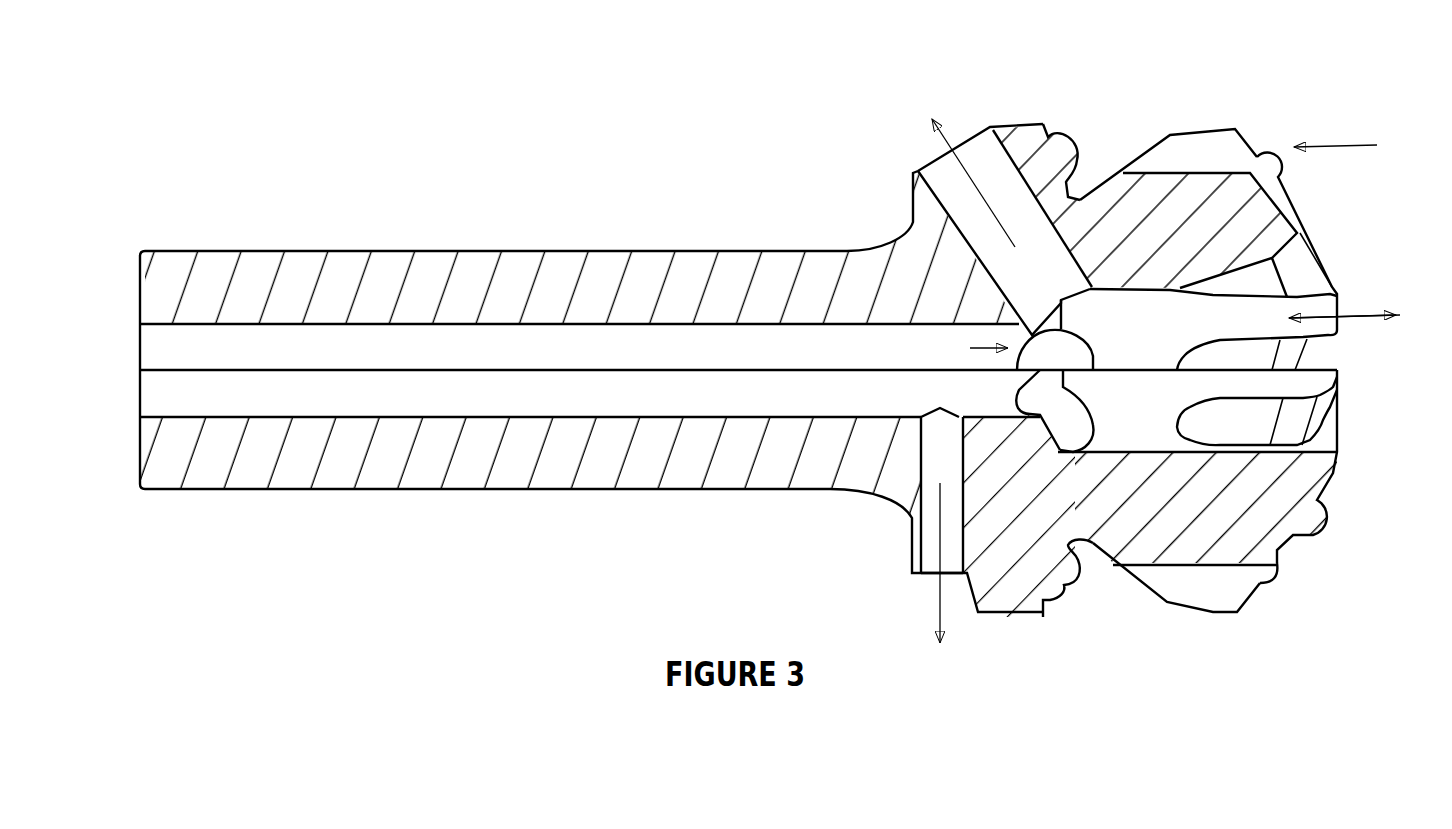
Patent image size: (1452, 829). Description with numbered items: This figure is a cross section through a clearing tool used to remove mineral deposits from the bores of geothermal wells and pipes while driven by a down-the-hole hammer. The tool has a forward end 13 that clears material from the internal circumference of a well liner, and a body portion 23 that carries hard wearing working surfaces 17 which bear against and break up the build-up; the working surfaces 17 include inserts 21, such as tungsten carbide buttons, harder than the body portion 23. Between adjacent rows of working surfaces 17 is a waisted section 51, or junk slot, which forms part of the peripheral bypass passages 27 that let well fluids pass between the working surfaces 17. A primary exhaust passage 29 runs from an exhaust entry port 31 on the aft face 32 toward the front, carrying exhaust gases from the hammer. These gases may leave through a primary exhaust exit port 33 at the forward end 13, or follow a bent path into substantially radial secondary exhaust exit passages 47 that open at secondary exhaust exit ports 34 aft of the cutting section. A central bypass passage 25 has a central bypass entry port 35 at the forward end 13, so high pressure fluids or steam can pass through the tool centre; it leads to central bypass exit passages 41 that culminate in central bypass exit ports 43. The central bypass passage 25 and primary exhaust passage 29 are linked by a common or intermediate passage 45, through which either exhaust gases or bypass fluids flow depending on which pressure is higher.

The forward end 13 is at (1347, 210).
The working surfaces 17 is at (1071, 110).
The inserts 21 is at (1325, 525).
The body portion 23 is at (990, 654).
The central bypass passage 25 is at (1112, 333).
The peripheral bypass passages 27 is at (1254, 130).
The primary exhaust passage 29 is at (423, 355).
The exhaust entry port 31 is at (181, 397).
The aft face 32 is at (137, 454).
The primary exhaust exit port 33 is at (1340, 352).
The secondary exhaust exit ports 34 is at (920, 587).
The central bypass entry port 35 is at (1340, 417).
The central bypass exit passages 41 is at (1015, 262).
The central bypass exit ports 43 is at (962, 116).
The common or intermediate passage 45 is at (988, 395).
The secondary exhaust exit passages 47 is at (945, 458).
The waisted section 51 is at (1101, 604).